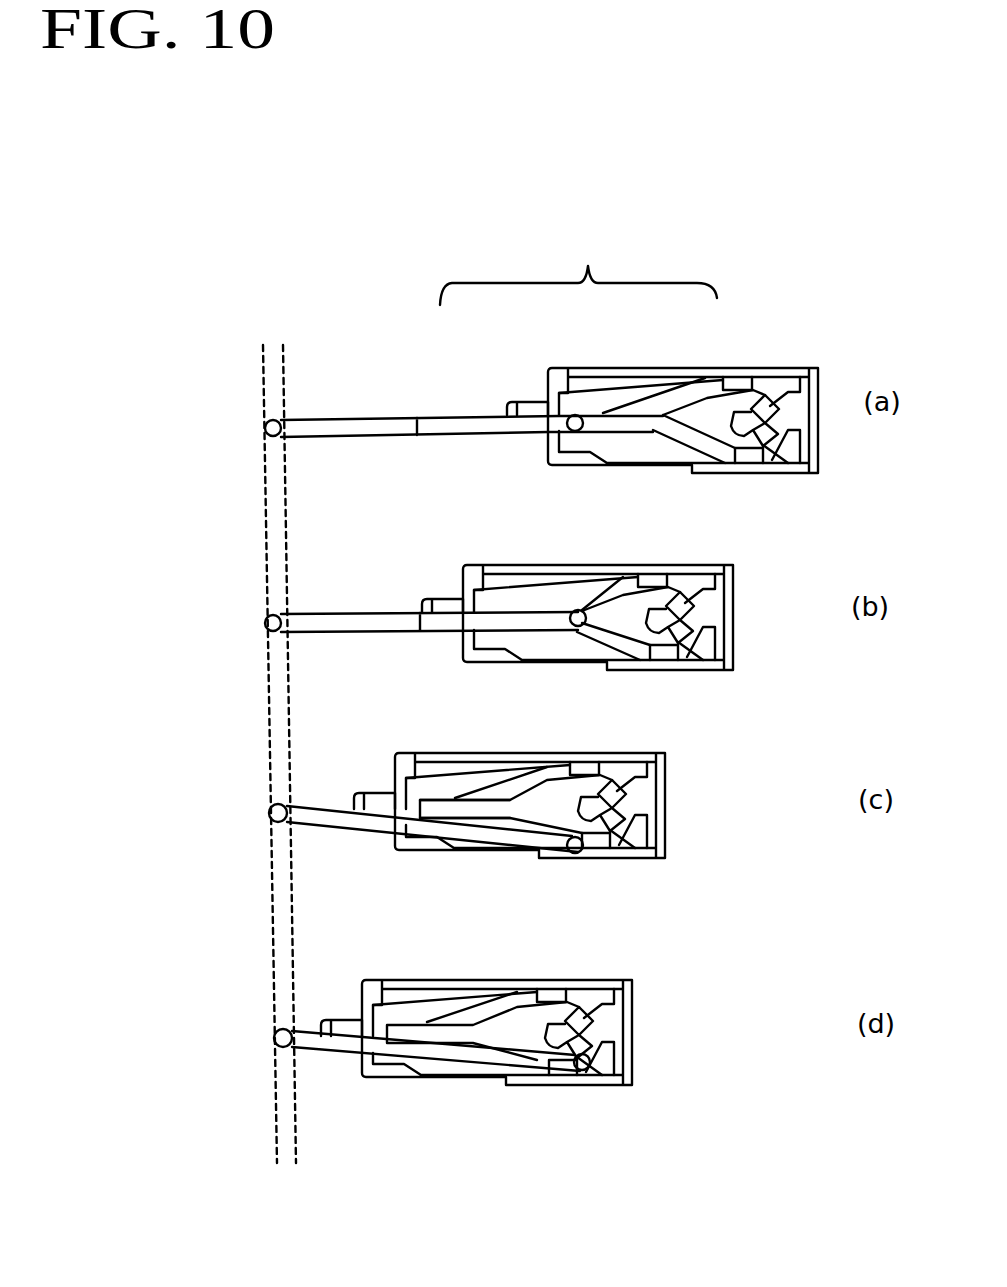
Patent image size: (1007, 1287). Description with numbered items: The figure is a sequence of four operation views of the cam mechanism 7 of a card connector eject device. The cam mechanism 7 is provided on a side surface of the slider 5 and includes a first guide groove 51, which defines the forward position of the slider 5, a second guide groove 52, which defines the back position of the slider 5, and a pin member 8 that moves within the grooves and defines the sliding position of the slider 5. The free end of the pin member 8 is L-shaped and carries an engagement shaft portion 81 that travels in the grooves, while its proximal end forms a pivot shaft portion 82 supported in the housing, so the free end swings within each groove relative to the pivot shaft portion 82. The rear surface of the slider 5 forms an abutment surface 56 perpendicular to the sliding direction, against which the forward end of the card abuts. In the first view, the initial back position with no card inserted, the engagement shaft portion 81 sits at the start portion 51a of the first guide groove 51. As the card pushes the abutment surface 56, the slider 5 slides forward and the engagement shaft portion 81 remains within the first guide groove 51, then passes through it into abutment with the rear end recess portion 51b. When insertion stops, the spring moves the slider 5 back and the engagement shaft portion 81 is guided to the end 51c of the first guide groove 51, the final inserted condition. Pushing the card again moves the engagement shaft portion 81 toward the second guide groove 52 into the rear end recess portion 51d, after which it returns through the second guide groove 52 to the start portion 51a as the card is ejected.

The slider 5 is at (705, 368).
The cam mechanism 7 is at (578, 263).
The pin member 8 is at (465, 417).
The first guide groove 51 is at (596, 413).
The start portion of first guide groove 51a is at (430, 805).
The rear end recess portion 51b is at (793, 466).
The end of first guide groove 51c is at (770, 413).
The rear end recess portion 51d is at (790, 388).
The second guide groove 52 is at (675, 395).
The abutment surface 56 is at (818, 428).
The engagement shaft portion 81 is at (572, 432).
The pivot shaft portion 82 is at (266, 430).